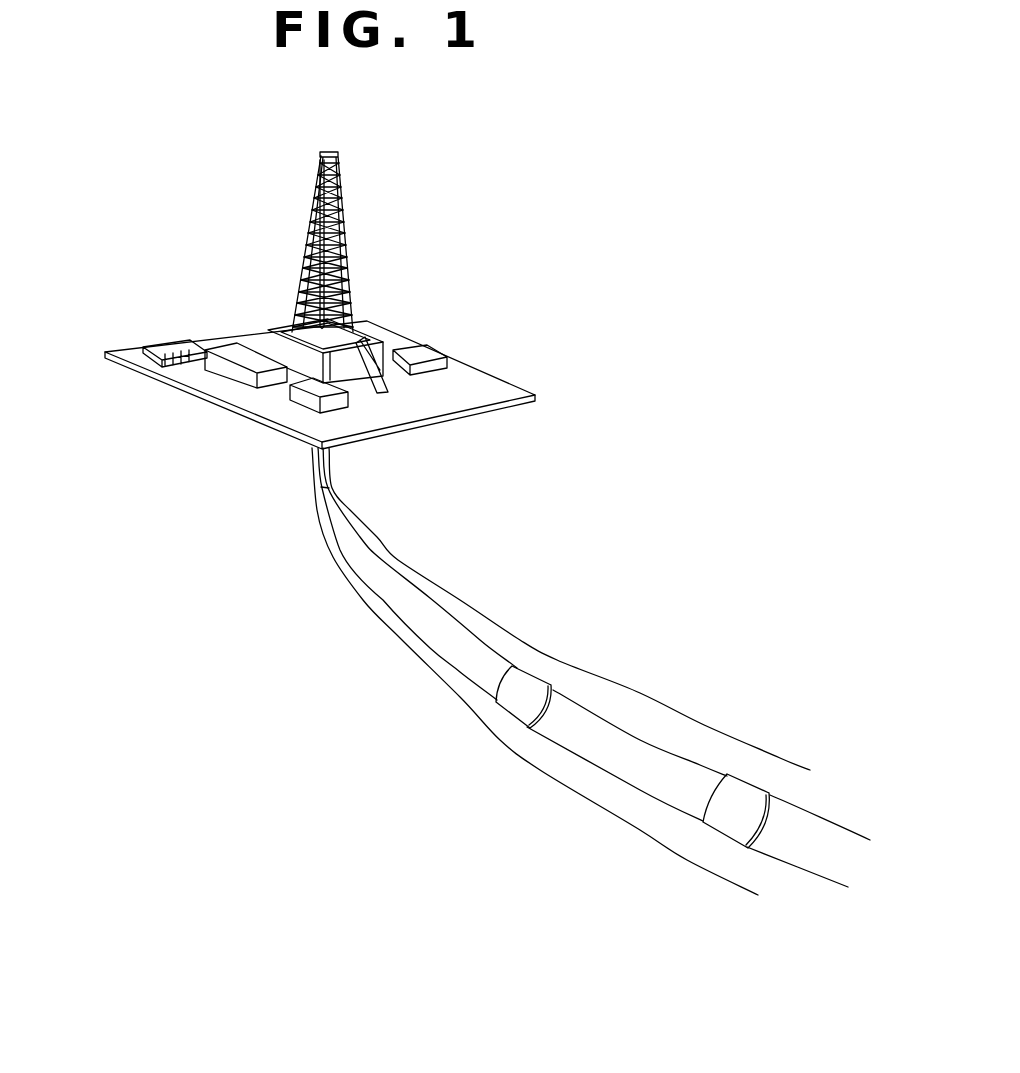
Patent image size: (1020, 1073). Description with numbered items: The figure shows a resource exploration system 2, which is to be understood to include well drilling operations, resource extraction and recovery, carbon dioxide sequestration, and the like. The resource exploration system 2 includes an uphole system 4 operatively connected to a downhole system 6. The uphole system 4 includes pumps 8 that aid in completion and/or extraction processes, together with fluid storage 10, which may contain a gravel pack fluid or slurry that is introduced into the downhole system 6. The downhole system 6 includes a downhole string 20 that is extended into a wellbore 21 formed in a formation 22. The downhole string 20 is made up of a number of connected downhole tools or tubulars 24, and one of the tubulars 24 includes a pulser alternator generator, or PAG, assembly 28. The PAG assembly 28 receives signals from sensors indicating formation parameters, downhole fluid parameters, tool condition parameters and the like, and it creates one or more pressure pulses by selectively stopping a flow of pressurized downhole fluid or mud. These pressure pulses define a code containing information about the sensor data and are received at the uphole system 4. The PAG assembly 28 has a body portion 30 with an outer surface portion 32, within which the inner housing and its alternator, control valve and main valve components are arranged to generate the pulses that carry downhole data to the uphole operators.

The resource exploration system 2 is at (630, 236).
The uphole system 4 is at (198, 232).
The downhole system 6 is at (345, 782).
The pumps 8 is at (227, 320).
The fluid storage 10 is at (409, 327).
The downhole string 20 is at (240, 522).
The wellbore 21 is at (375, 547).
The formation 22 is at (277, 676).
The tubulars 24 is at (447, 634).
The pulser alternator generator (PAG) assembly 28 is at (673, 832).
The body portion 30 is at (582, 750).
The outer surface portion 32 is at (688, 775).